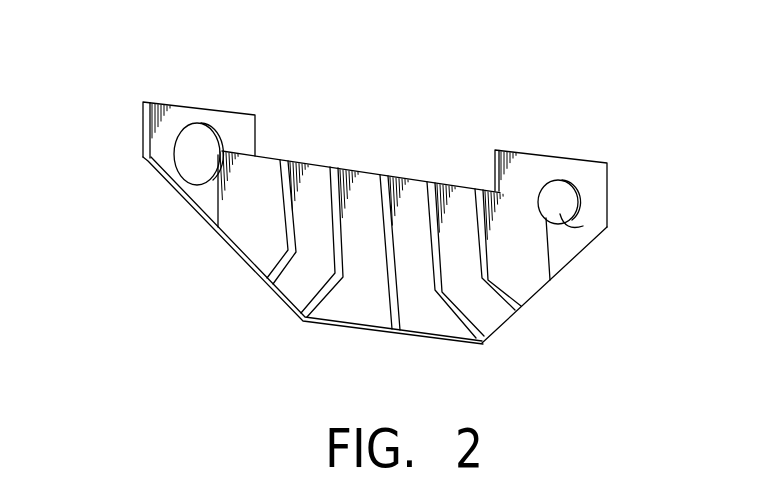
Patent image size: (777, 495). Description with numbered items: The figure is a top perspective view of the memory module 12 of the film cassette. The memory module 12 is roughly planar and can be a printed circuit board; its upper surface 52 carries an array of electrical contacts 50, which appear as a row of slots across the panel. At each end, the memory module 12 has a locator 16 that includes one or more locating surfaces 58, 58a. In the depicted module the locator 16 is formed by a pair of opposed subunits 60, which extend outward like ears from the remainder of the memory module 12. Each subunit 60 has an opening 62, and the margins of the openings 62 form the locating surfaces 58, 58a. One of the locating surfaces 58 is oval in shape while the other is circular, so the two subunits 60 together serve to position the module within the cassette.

The memory module 12 is at (445, 60).
The locator 16 is at (607, 193).
The electrical contacts 50 is at (254, 248).
The upper surface 52 is at (447, 181).
The locating surfaces 58 is at (576, 236).
The aperture 58a is at (181, 154).
The subunits 60 is at (168, 101).
The opening 62 is at (202, 136).